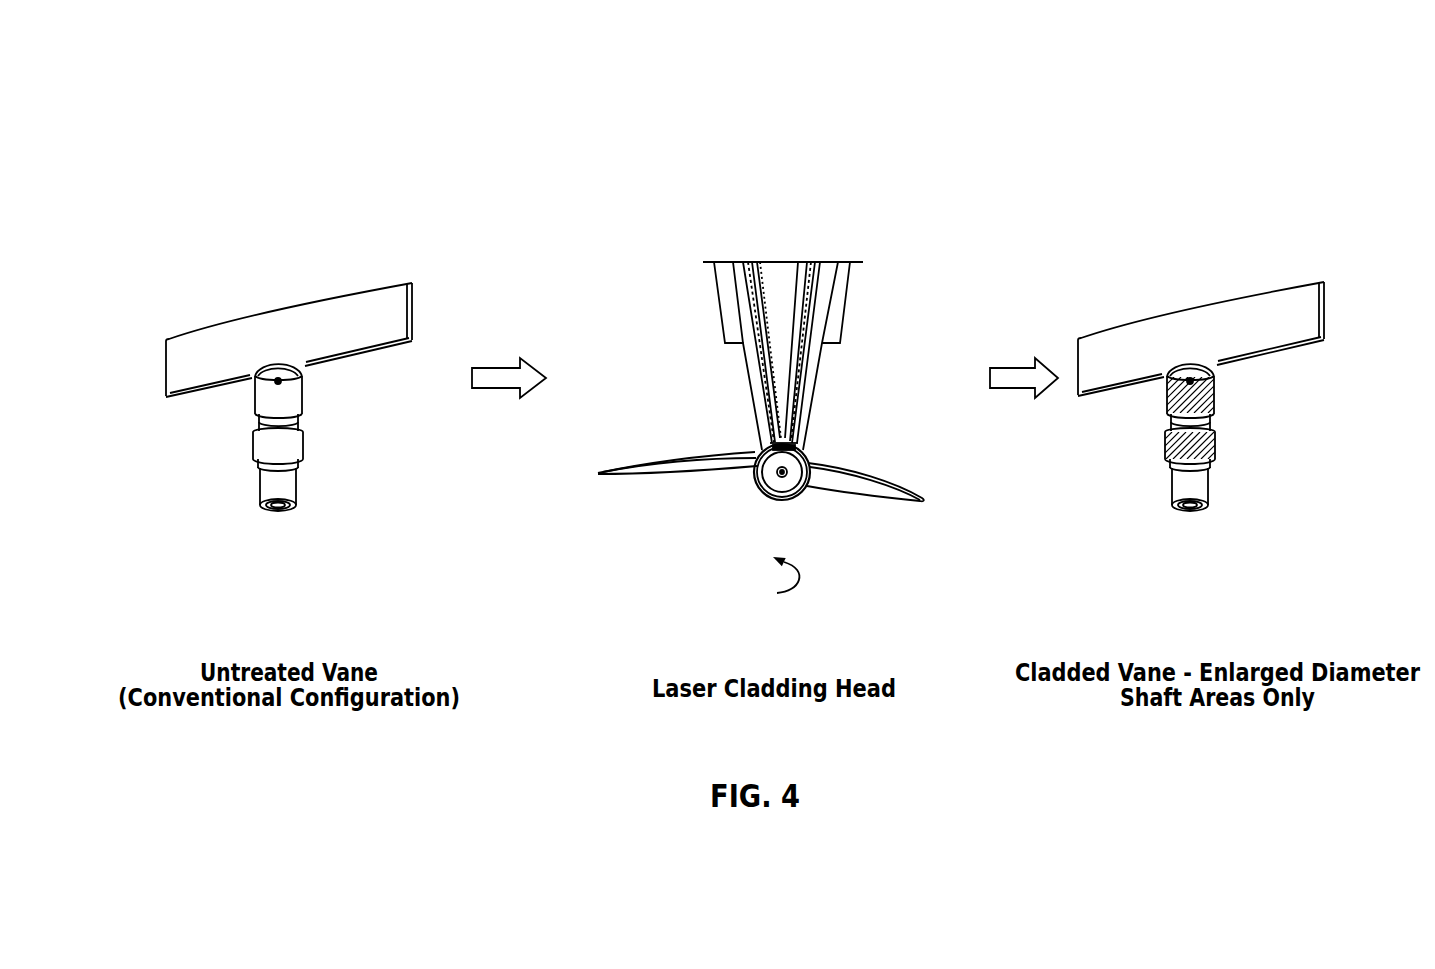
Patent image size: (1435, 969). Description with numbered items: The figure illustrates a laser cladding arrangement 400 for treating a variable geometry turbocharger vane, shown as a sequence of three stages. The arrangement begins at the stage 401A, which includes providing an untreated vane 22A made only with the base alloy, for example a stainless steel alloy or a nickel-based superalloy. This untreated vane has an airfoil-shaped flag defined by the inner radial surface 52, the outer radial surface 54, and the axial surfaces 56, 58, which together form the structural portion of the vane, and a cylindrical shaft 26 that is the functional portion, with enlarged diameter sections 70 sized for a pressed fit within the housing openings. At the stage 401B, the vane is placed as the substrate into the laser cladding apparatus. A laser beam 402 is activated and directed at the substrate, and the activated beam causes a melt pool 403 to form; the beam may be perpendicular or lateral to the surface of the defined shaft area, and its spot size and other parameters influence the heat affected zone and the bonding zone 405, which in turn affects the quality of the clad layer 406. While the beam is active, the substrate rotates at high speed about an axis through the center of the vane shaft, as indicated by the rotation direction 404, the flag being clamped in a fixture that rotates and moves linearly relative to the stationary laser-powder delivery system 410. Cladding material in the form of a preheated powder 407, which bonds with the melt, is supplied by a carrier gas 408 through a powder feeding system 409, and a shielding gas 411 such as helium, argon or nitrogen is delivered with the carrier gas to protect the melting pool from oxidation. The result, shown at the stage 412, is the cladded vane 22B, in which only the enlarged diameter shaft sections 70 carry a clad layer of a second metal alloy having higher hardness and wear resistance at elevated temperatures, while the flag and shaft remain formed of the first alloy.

The laser cladding arrangement 400 is at (171, 175).
The untreated vane 22A is at (233, 298).
The inner radial surface 52 is at (229, 374).
The outer radial surface 54 is at (229, 374).
The axial surface 56 is at (229, 374).
The axial surface 58 is at (150, 362).
The shaft 26 is at (239, 467).
The untreated vane providing step 401A is at (320, 425).
The laser-powder delivery system 410 is at (703, 269).
The powder feeding system 409 is at (865, 269).
The carrier gas 408 is at (871, 352).
The shielding gas 411 is at (838, 369).
The cladding powder 407 is at (821, 401).
The laser beam 402 is at (776, 372).
The melt pool 403 is at (776, 424).
The substrate vane 401B is at (842, 491).
The bonding zone 405 is at (743, 470).
The clad layer 406 is at (745, 452).
The vane rotation direction 404 is at (788, 593).
The variable geometry turbocharger vane 22B is at (1158, 298).
The cladded vane shaft areas 412 is at (1274, 443).
The enlarged diameter sections 70 is at (1230, 404).